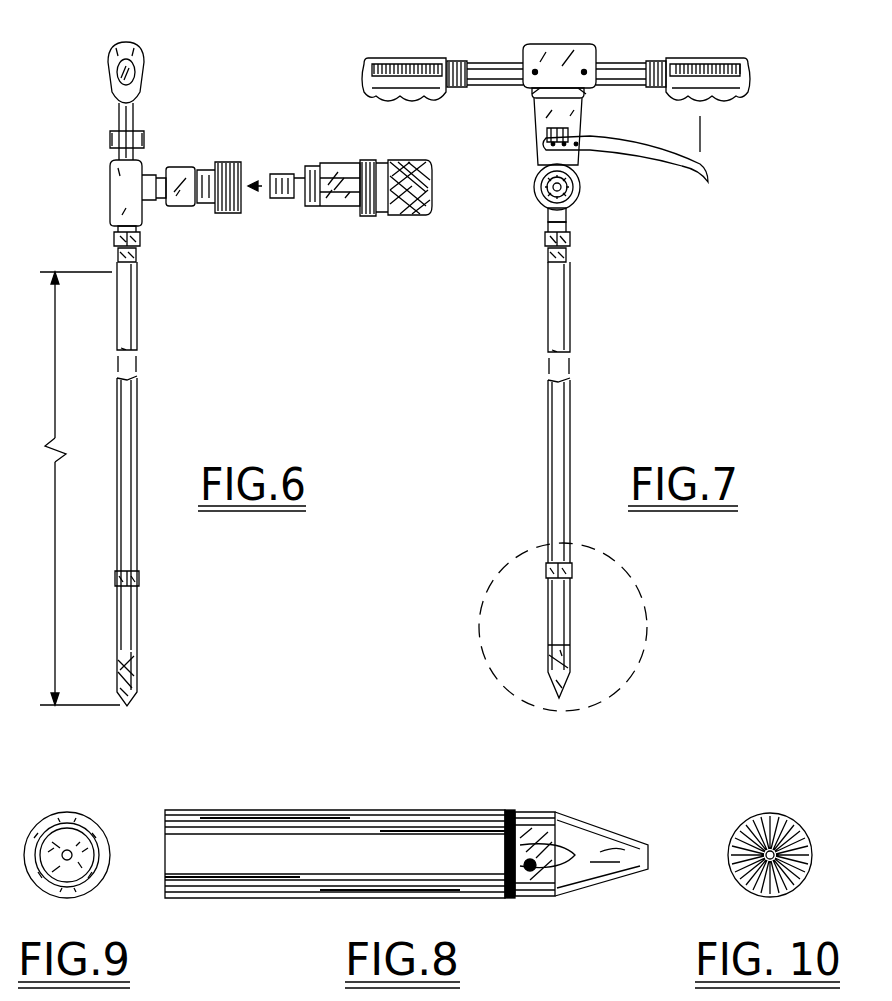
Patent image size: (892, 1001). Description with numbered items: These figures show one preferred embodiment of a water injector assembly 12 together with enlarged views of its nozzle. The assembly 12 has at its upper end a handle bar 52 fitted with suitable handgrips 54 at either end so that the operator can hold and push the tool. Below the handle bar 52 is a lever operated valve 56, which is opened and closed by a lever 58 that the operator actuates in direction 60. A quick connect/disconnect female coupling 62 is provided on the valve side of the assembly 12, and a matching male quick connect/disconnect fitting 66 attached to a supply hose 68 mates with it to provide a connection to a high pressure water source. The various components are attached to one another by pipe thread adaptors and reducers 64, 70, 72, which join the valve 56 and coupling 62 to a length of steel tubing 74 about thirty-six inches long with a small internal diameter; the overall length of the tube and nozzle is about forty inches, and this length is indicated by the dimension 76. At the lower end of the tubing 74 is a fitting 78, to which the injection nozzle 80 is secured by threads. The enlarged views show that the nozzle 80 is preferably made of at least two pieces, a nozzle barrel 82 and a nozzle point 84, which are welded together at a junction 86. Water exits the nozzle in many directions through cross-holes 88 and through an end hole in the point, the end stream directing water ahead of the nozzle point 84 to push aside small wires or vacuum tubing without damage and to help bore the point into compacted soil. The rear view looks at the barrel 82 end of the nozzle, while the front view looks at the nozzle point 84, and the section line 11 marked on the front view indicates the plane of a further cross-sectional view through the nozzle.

In FIG. 7, the water injector assembly 12 is at (596, 274).
In FIG. 7, the handle bar 52 is at (492, 63).
In FIG. 6, the handgrips 54 is at (135, 72).
In FIG. 7, the handgrips 54 is at (390, 58).
In FIG. 6, the lever operated valve 56 is at (130, 46).
In FIG. 7, the lever operated valve 56 is at (568, 45).
In FIG. 6, the lever 58 is at (118, 150).
In FIG. 7, the lever 58 is at (614, 160).
In FIG. 7, the direction 60 is at (700, 152).
In FIG. 6, the quick connect/disconnect female coupling 62 is at (232, 214).
In FIG. 7, the quick connect/disconnect female coupling 62 is at (534, 180).
In FIG. 6, the pipe thread adaptor 64 is at (178, 167).
In FIG. 6, the male quick connect/disconnect fitting 66 is at (330, 207).
In FIG. 6, the supply hose 68 is at (400, 216).
In FIG. 6, the pipe thread adaptor 70 is at (140, 240).
In FIG. 7, the pipe thread adaptor 70 is at (545, 238).
In FIG. 6, the pipe thread reducer 72 is at (120, 256).
In FIG. 7, the pipe thread reducer 72 is at (552, 262).
In FIG. 6, the steel tubing 74 is at (138, 394).
In FIG. 7, the steel tubing 74 is at (572, 398).
In FIG. 6, the tube length dimension 76 is at (60, 393).
In FIG. 6, the fitting 78 is at (140, 580).
In FIG. 7, the fitting 78 is at (548, 565).
In FIG. 6, the injection nozzle 80 is at (138, 632).
In FIG. 7, the injection nozzle 80 is at (548, 632).
In FIG. 8, the injection nozzle 80 is at (390, 798).
In FIG. 9, the nozzle barrel 82 is at (78, 815).
In FIG. 9, the nozzle point 84 is at (64, 866).
In FIG. 10, the nozzle point 84 is at (742, 834).
In FIG. 8, the junction 86 is at (508, 812).
In FIG. 7, the cross-holes 88 is at (647, 630).
In FIG. 8, the cross-holes 88 is at (546, 813).
In FIG. 10, the section line 11- 11 is at (772, 917).